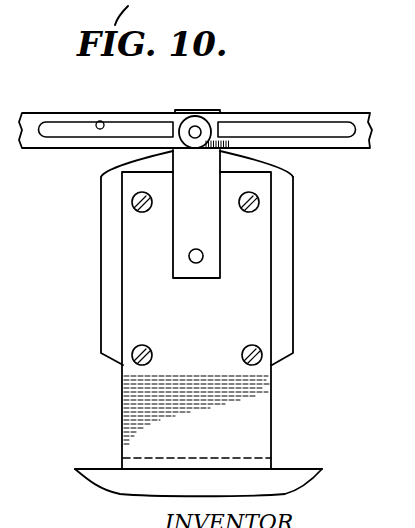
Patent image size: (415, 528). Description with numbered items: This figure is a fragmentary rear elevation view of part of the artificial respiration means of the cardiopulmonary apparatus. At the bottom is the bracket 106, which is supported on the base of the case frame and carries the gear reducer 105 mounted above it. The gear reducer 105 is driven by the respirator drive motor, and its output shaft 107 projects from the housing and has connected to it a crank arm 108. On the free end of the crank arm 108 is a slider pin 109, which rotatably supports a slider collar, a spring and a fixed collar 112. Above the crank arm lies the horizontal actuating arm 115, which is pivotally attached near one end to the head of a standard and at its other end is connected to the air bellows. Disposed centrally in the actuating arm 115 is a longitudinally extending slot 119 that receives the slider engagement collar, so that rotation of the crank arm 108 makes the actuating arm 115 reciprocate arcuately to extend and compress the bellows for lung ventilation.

The gear reducer 105 is at (283, 284).
The bracket 106 is at (198, 430).
The output shaft 107 is at (192, 262).
The crank arm 108 is at (201, 203).
The slider pin 109 is at (197, 126).
The fixed collar 112 is at (206, 120).
The actuating arm 115 is at (36, 121).
The longitudinally extending slot 119 is at (103, 121).